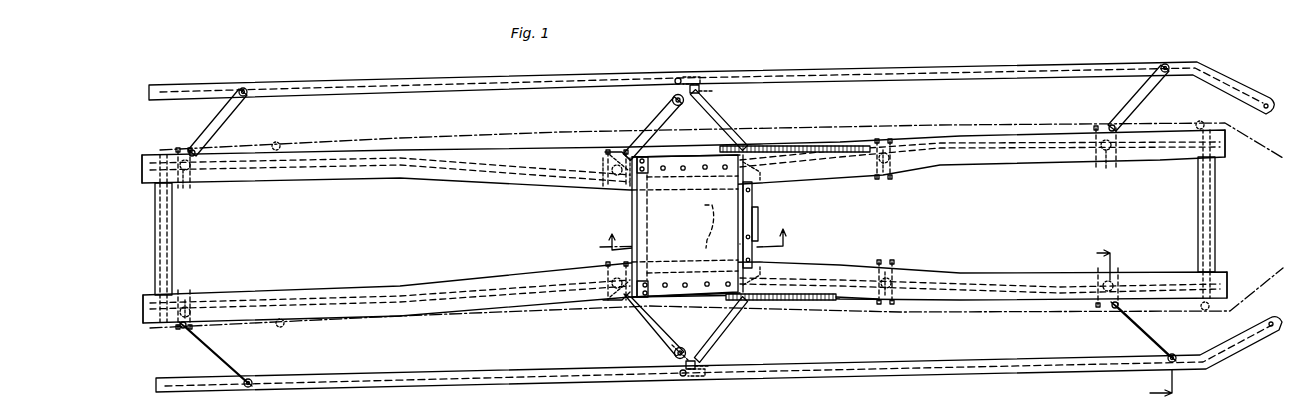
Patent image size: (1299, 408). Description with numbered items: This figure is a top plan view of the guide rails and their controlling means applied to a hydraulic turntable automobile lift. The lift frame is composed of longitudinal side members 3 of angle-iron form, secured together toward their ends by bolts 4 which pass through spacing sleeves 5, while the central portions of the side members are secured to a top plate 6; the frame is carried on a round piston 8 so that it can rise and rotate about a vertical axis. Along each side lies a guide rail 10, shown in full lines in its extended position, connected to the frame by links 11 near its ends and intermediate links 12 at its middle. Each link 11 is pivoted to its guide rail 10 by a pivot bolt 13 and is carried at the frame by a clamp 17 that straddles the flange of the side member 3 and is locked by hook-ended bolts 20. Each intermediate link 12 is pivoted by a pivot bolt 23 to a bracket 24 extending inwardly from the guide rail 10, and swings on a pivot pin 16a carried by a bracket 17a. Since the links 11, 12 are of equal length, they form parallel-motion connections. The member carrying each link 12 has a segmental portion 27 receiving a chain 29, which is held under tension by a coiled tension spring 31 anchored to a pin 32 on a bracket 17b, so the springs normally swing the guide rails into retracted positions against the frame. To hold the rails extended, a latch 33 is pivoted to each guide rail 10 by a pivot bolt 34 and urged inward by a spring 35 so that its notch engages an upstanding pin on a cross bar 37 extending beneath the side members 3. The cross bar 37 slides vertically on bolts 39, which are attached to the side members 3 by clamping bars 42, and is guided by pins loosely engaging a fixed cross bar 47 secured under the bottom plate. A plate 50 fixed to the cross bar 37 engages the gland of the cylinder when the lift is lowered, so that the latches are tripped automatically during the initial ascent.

The longitudinal side member 3 is at (381, 177).
The bolt 4 is at (152, 320).
The spacing sleeve 5 is at (172, 262).
The top plate 6 is at (632, 211).
The piston 8 is at (1138, 321).
The guide rail 10 is at (815, 70).
The link 11 is at (215, 112).
The intermediate link 12 is at (648, 128).
The pivot bolt 13 is at (247, 88).
The pivot pin 16a is at (604, 186).
The clamp 17 is at (178, 328).
The bracket 17a is at (606, 160).
The bracket 17b is at (884, 139).
The bolt 20 is at (185, 186).
The pivot bolt 23 is at (668, 350).
The bracket 24 is at (667, 100).
The segmental portion 27 is at (611, 153).
The chain 29 is at (660, 148).
The coiled tension spring 31 is at (781, 146).
The pin 32 is at (884, 176).
The latch 33 is at (720, 122).
The pivot bolt 34 is at (680, 77).
The spring 35 is at (700, 91).
The cross bar 37 is at (752, 272).
The bolt 39 is at (758, 221).
The clamping bar 42 is at (753, 200).
The cross bar 47 is at (648, 212).
The plate 50 is at (707, 212).